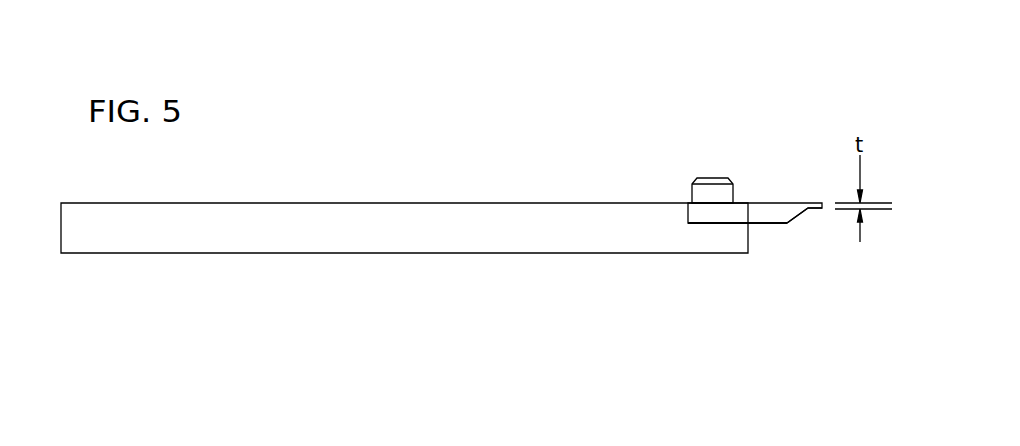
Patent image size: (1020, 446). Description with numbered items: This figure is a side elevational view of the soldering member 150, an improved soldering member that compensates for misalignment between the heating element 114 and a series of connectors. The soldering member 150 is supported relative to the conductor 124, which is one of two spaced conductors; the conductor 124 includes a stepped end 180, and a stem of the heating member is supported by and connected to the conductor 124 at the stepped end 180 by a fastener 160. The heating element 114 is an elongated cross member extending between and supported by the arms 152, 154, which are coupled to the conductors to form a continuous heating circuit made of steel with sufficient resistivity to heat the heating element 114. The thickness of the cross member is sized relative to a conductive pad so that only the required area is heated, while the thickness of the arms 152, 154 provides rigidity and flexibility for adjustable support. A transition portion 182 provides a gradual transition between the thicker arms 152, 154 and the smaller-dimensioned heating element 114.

The conductor 124 is at (497, 203).
The soldering member 150 is at (790, 202).
The arm 152 is at (770, 223).
The arm 154 is at (770, 223).
The fastener 160 is at (718, 180).
The stepped end 180 is at (710, 222).
The transition portion 182 is at (788, 223).
The heating element 114 is at (815, 208).